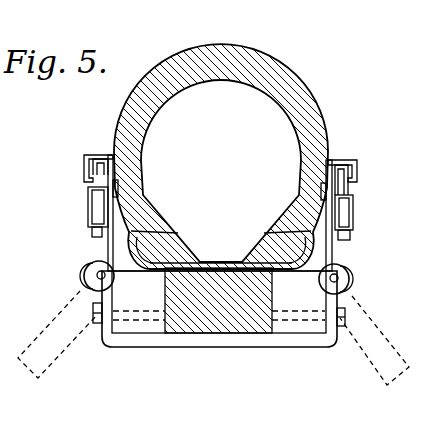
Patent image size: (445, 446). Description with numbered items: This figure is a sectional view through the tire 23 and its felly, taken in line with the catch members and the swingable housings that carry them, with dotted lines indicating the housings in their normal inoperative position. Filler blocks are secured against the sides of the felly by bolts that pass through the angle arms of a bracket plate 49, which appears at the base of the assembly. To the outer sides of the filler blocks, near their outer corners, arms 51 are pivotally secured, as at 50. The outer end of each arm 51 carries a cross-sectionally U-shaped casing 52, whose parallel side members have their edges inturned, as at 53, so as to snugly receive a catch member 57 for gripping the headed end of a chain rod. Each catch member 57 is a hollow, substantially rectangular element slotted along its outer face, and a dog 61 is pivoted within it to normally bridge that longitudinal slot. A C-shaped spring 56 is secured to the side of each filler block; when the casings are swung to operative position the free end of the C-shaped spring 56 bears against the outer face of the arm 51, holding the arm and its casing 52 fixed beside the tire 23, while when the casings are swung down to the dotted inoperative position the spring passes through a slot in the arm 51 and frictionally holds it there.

The tire 23 is at (295, 82).
The bracket plate 49 is at (272, 336).
The pivot 50 is at (352, 279).
The arm 51 is at (333, 256).
The casing 52 is at (97, 153).
The inturned edges 53 is at (84, 157).
The C-shaped spring 56 is at (88, 268).
The catch member 57 is at (88, 198).
The dog 61 is at (100, 208).